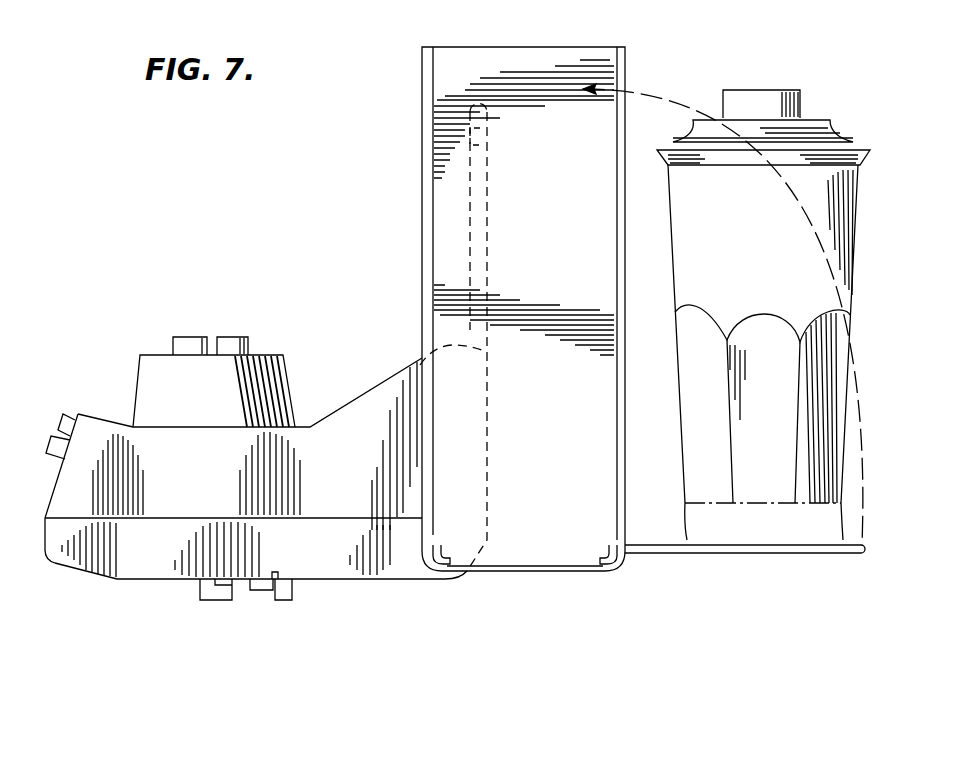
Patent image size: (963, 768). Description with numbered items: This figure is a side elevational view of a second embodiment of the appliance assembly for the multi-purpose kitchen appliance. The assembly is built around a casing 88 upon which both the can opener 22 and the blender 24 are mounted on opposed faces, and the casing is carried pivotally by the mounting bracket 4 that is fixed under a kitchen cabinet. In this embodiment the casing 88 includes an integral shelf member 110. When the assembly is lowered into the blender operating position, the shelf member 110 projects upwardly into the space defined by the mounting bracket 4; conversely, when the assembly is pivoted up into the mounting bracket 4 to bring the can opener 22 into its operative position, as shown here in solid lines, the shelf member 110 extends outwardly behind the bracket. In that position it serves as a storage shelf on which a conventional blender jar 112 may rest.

The mounting bracket 4 is at (421, 237).
The can opener 22 is at (296, 590).
The blender 24 is at (275, 355).
The casing 88 is at (365, 560).
The shelf member 110 is at (487, 133).
The blender jar 112 is at (707, 463).